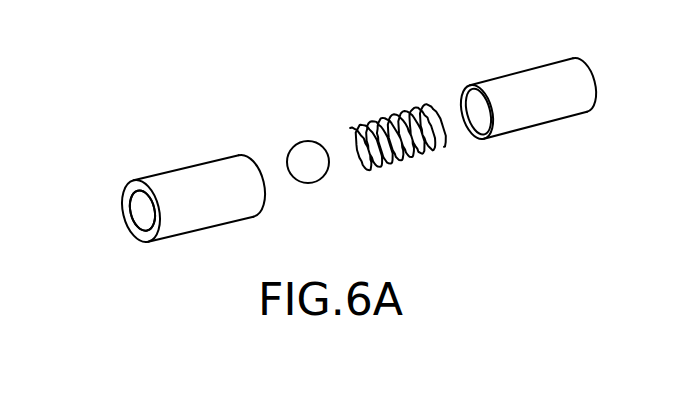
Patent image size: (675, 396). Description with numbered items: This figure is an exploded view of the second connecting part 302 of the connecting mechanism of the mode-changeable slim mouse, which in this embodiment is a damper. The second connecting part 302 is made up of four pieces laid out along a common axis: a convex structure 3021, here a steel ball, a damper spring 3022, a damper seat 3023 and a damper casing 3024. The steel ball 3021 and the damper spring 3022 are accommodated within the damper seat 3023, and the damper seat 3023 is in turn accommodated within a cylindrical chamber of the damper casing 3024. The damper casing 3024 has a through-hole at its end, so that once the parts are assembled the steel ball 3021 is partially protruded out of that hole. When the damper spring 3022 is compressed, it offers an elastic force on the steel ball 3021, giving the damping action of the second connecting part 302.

The second connecting part 302 is at (242, 57).
The convex structure 3021 is at (302, 153).
The damper spring 3022 is at (392, 117).
The damper seat 3023 is at (532, 80).
The damper casing 3024 is at (183, 178).